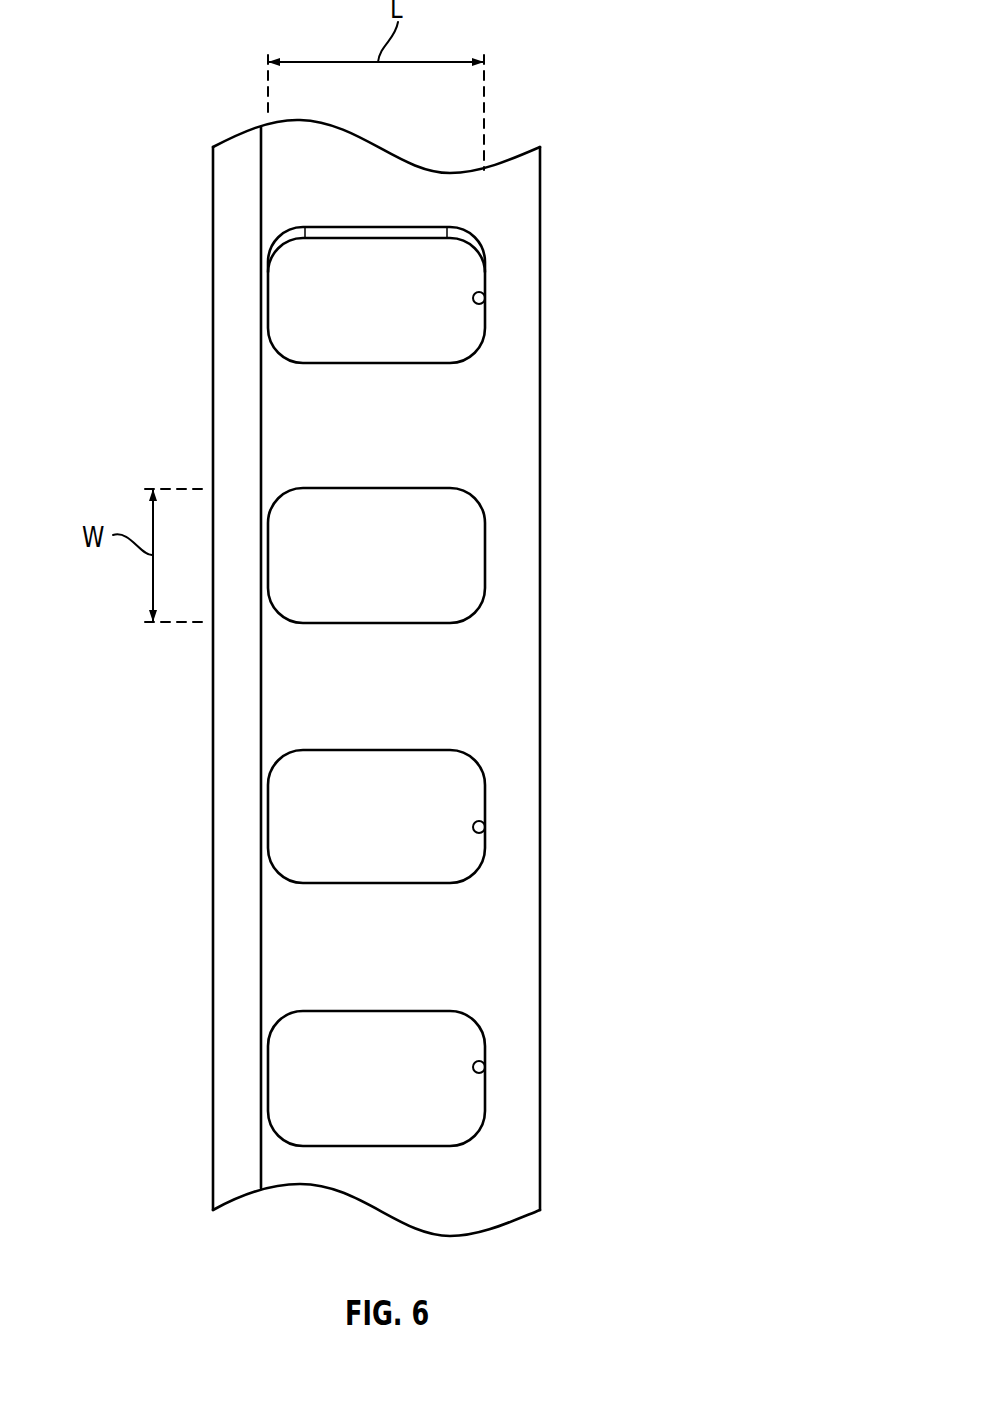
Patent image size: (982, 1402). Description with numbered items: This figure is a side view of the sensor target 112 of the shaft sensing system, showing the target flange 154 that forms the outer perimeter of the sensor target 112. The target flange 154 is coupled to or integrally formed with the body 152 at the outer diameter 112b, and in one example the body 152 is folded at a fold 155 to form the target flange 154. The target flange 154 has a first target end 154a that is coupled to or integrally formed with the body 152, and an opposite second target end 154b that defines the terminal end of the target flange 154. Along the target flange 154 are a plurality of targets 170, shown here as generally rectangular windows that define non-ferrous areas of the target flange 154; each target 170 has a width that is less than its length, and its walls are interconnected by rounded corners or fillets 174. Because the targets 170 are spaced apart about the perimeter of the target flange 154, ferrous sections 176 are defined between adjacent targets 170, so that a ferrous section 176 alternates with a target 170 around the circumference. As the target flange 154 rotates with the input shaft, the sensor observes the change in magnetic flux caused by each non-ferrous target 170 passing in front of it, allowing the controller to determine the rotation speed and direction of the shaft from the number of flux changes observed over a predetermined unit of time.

The sensor target 112 is at (707, 458).
The outer diameter 112b is at (242, 1180).
The body 152 is at (212, 1087).
The target flange 154 is at (547, 433).
The first target end 154a is at (261, 695).
The second target end 154b is at (540, 590).
The fold 155 is at (237, 1033).
The targets 170 is at (486, 305).
The rounded corners or fillets 174 is at (470, 752).
The ferrous sections 176 is at (435, 409).